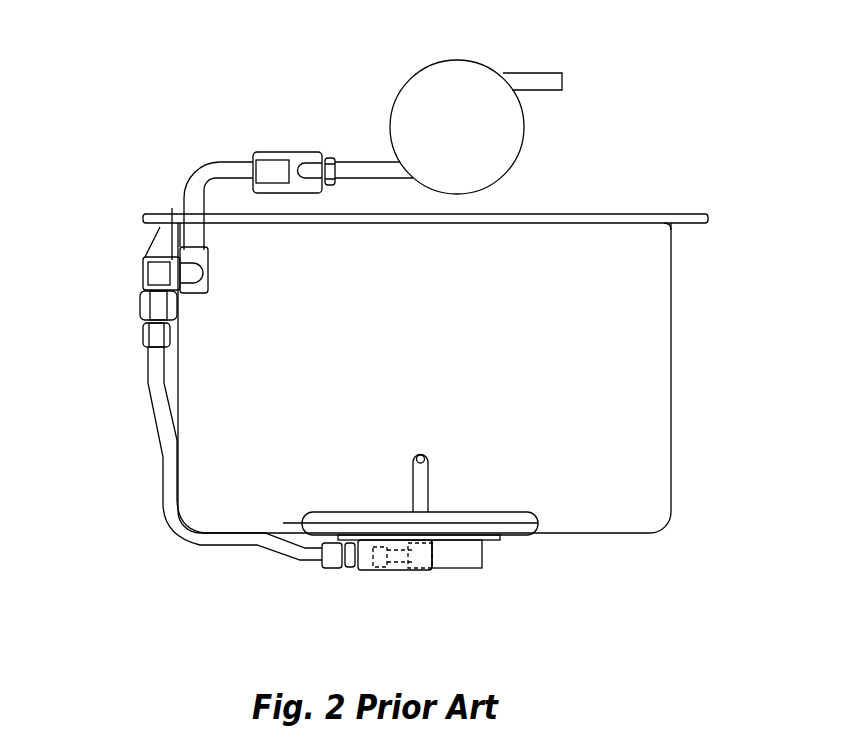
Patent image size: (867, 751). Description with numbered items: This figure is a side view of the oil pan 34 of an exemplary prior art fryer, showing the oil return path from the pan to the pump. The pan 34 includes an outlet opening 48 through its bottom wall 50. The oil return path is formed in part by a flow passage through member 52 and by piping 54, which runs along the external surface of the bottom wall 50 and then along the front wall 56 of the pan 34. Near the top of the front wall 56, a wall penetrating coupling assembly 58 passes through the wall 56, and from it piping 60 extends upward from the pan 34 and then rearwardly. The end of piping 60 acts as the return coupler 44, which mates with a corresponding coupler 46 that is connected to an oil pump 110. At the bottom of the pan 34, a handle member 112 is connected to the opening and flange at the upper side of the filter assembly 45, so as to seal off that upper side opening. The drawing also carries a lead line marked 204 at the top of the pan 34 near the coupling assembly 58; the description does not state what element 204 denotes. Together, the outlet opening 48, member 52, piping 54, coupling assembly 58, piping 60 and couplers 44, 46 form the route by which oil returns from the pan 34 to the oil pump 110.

The pan 34 is at (425, 315).
The oil pump 110 is at (473, 61).
The piping 60 is at (190, 180).
The return coupler 44 is at (258, 153).
The coupler 46 is at (331, 157).
The tank top plate 204 is at (156, 214).
The wall penetrating coupling assembly 58 is at (118, 278).
The front wall 56 is at (178, 392).
The piping 54 is at (163, 507).
The filter assembly 45 is at (374, 493).
The bottom wall 50 is at (502, 523).
The handle member 112 is at (428, 470).
The member 52 is at (482, 558).
The outlet opening 48 is at (435, 542).